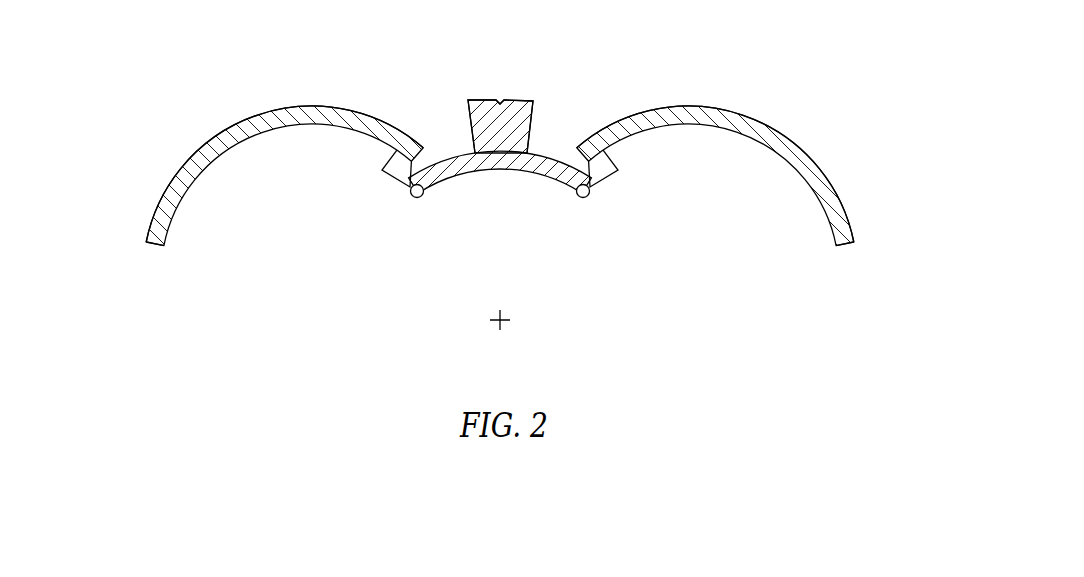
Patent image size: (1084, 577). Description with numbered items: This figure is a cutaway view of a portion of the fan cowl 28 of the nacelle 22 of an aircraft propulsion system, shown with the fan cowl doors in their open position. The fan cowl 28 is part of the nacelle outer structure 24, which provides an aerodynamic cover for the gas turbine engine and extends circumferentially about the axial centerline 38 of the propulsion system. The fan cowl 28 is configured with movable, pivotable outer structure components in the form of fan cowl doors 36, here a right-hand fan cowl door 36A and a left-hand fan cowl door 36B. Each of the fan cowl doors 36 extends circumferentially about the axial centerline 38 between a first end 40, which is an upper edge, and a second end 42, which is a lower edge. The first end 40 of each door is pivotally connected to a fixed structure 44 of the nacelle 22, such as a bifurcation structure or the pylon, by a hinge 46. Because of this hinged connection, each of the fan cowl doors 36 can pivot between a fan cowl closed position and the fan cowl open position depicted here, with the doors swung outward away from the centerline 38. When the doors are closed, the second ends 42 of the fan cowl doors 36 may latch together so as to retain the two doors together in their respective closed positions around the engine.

The nacelle 22 is at (790, 77).
The nacelle outer structure 24 is at (796, 131).
The fan cowl 28 is at (206, 133).
The fan cowl doors 36 is at (502, 157).
The right-hand fan cowl door 36A is at (817, 165).
The left-hand fan cowl door 36B is at (183, 165).
The axial centerline 38 is at (501, 322).
The first end 40 is at (420, 133).
The second end 42 is at (149, 258).
The fixed structure 44 is at (503, 112).
The hinge 46 is at (403, 183).